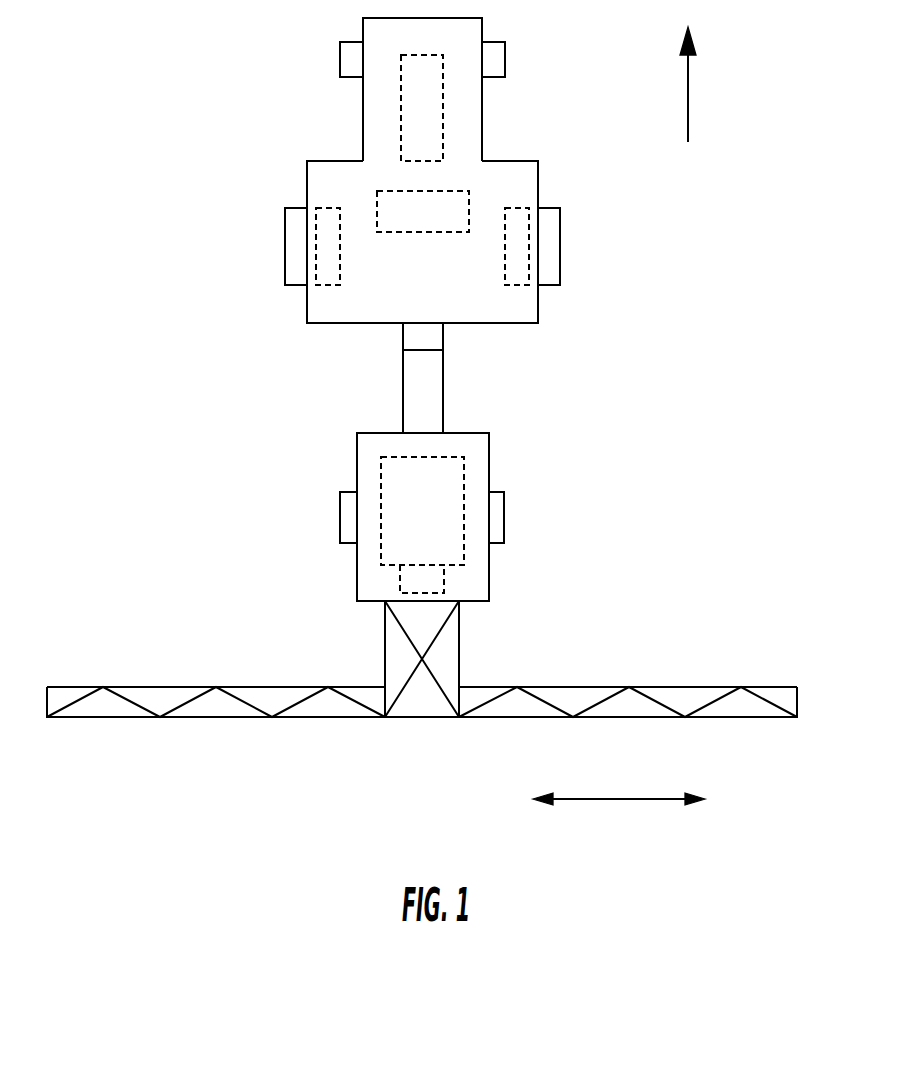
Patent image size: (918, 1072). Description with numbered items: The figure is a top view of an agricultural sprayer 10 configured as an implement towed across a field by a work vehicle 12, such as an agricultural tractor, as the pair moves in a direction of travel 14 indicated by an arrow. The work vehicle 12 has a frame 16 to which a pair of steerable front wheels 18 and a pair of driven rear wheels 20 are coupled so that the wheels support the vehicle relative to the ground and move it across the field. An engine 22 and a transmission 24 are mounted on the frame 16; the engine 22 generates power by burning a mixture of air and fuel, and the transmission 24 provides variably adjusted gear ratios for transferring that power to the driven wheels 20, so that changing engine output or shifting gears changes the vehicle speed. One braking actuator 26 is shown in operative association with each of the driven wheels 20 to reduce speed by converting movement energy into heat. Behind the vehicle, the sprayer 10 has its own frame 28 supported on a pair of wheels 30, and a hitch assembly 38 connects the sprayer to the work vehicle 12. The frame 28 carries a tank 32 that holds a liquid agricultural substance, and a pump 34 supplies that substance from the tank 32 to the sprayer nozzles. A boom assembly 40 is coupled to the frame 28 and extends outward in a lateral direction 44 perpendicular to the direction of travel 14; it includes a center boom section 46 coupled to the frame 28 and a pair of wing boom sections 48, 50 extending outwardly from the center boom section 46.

The agricultural sprayer 10 is at (121, 460).
The work vehicle 12 is at (193, 100).
The direction of travel 14 is at (688, 107).
The frame 16 is at (482, 140).
The steerable front wheels 18 is at (340, 57).
The driven rear wheels 20 is at (285, 247).
The engine 22 is at (401, 100).
The transmission 24 is at (423, 232).
The braking actuators 26 is at (517, 208).
The frame 28 is at (357, 463).
The wheels 30 is at (340, 530).
The tank 32 is at (464, 480).
The pump 34 is at (444, 585).
The hitch assembly 38 is at (443, 408).
The boom assembly 40 is at (325, 750).
The lateral direction 44 is at (620, 800).
The center boom section 46 is at (459, 658).
The wing boom section 48 is at (200, 718).
The wing boom section 50 is at (688, 687).